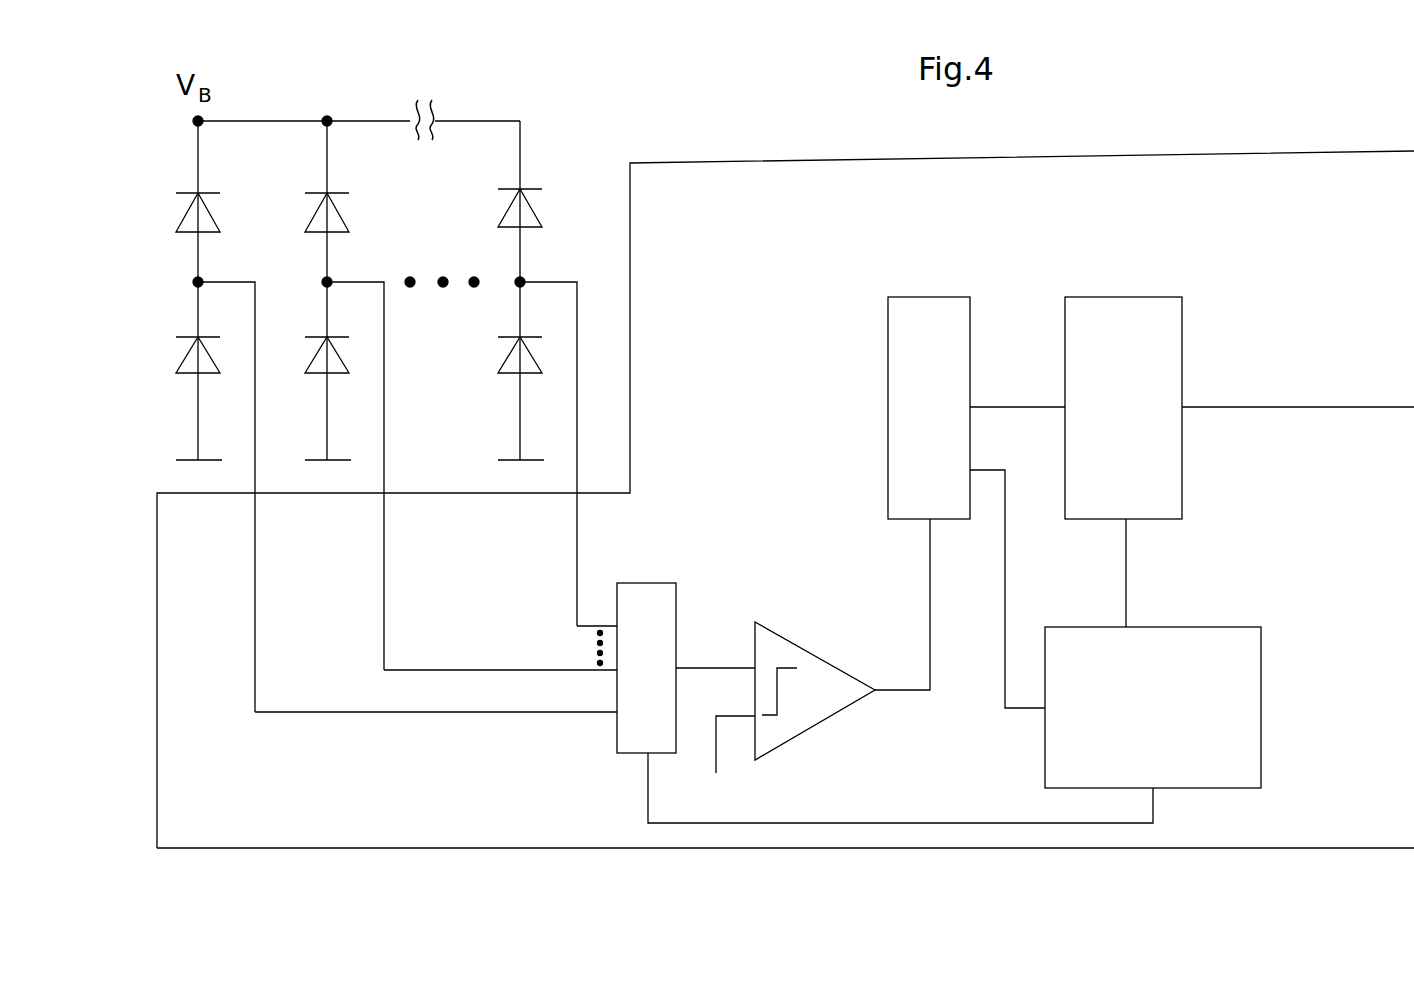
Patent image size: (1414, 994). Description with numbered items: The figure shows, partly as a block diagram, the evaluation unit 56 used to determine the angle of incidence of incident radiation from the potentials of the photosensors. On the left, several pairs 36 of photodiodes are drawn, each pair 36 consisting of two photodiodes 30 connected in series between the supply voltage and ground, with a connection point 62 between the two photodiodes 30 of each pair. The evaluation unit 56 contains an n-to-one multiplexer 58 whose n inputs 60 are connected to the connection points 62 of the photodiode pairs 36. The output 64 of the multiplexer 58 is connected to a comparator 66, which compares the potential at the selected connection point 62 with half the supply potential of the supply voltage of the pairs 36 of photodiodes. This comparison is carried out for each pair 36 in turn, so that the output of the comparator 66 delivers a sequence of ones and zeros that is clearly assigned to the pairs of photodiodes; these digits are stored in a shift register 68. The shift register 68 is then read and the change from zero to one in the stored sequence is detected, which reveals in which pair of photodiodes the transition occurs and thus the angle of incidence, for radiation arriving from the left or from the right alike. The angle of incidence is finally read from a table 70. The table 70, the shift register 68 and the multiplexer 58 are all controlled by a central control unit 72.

The photodiode 30 is at (190, 355).
The pair of photodiodes 36 is at (176, 282).
The evaluation unit 56 is at (738, 187).
The multiplexer 58 is at (652, 598).
The inputs 60 is at (600, 624).
The connection point 62 is at (195, 287).
The output 64 is at (706, 668).
The comparator 66 is at (820, 682).
The shift register 68 is at (898, 345).
The table 70 is at (1150, 345).
The central control unit 72 is at (1222, 654).